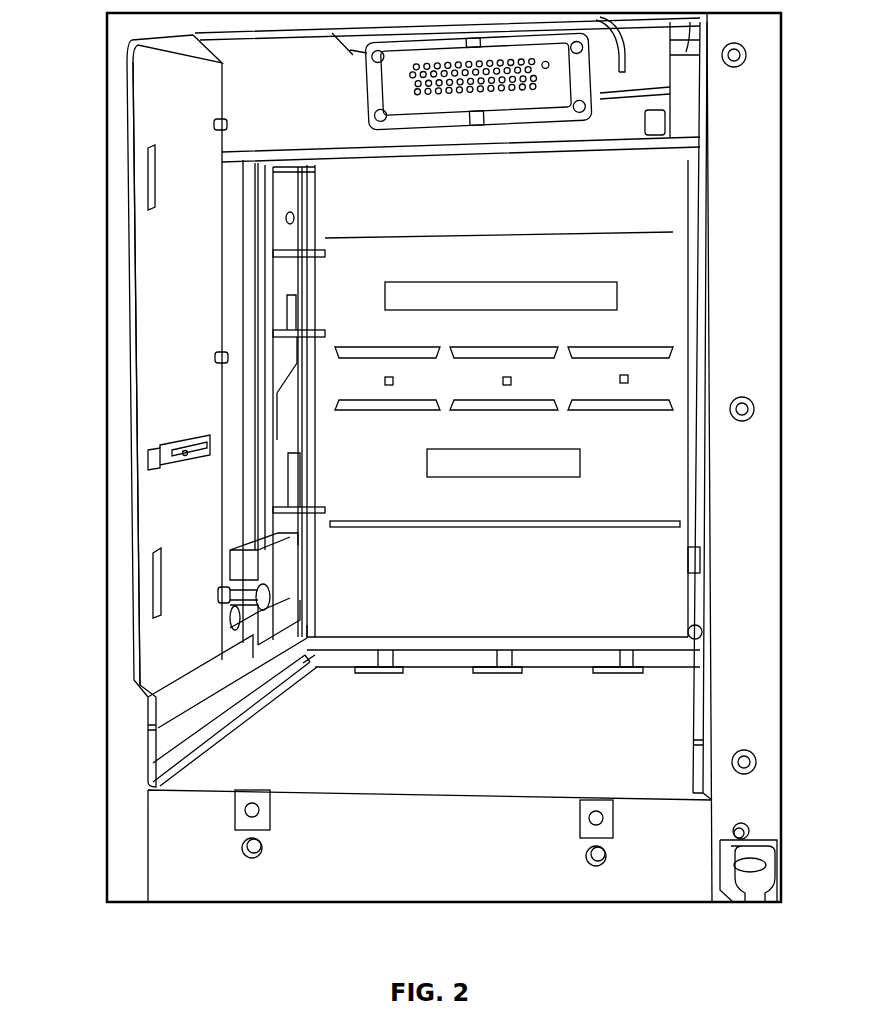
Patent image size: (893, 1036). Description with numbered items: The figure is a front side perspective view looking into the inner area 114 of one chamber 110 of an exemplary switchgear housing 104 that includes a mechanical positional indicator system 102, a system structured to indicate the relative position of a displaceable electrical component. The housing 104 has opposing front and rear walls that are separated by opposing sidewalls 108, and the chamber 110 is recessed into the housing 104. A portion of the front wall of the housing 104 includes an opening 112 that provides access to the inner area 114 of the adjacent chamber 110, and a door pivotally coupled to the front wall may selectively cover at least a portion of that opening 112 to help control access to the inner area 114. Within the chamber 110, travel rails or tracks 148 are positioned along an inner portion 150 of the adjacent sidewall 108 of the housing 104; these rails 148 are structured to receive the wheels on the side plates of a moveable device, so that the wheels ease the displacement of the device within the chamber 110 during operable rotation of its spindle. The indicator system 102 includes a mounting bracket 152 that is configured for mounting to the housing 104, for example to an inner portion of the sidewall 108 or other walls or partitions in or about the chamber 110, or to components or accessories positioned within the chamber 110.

The mechanical positional indicator system 102 is at (166, 433).
The housing 104 is at (750, 348).
The sidewall 108 is at (148, 320).
The chamber 110 is at (657, 735).
The opening 112 is at (667, 700).
The inner area 114 is at (501, 209).
The travel rail 148 is at (150, 753).
The inner portion 150 is at (148, 259).
The mounting bracket 152 is at (163, 467).